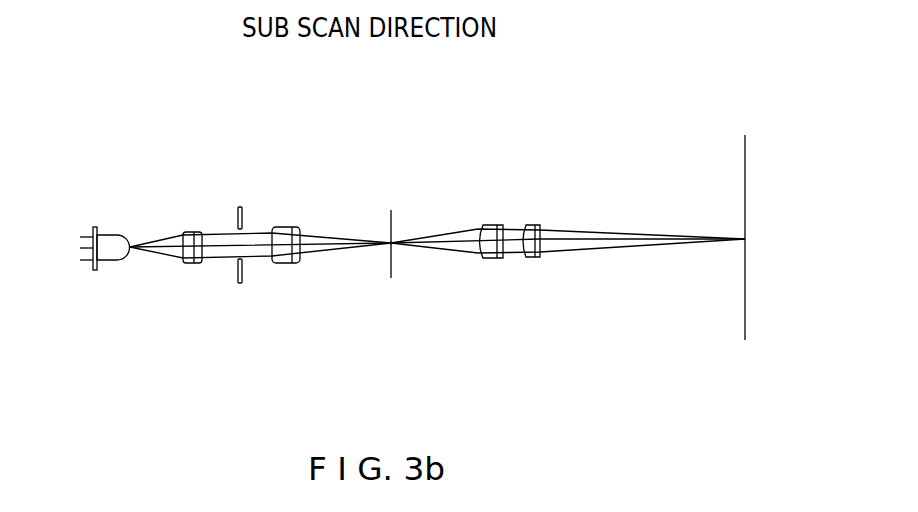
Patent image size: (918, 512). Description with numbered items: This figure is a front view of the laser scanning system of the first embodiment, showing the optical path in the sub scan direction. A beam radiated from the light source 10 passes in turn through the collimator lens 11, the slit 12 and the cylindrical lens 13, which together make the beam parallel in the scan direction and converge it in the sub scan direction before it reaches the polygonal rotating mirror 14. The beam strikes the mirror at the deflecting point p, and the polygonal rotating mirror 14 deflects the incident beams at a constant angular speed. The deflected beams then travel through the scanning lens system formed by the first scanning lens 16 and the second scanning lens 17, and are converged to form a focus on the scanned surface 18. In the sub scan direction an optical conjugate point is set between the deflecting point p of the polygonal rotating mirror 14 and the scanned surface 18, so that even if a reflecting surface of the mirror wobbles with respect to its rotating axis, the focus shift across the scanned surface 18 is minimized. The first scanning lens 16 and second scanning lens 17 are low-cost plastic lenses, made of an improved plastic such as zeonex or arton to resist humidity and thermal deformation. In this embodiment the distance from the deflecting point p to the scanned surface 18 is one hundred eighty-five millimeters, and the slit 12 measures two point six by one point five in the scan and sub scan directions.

The light source 10 is at (111, 260).
The collimator lens 11 is at (193, 231).
The slit 12 is at (239, 284).
The cylindrical lens 13 is at (290, 228).
The deflecting point p is at (387, 228).
The polygonal rotating mirror 14 is at (388, 258).
The first scanning lens 16 is at (485, 260).
The second scanning lens 17 is at (530, 222).
The scanned surface 18 is at (743, 275).